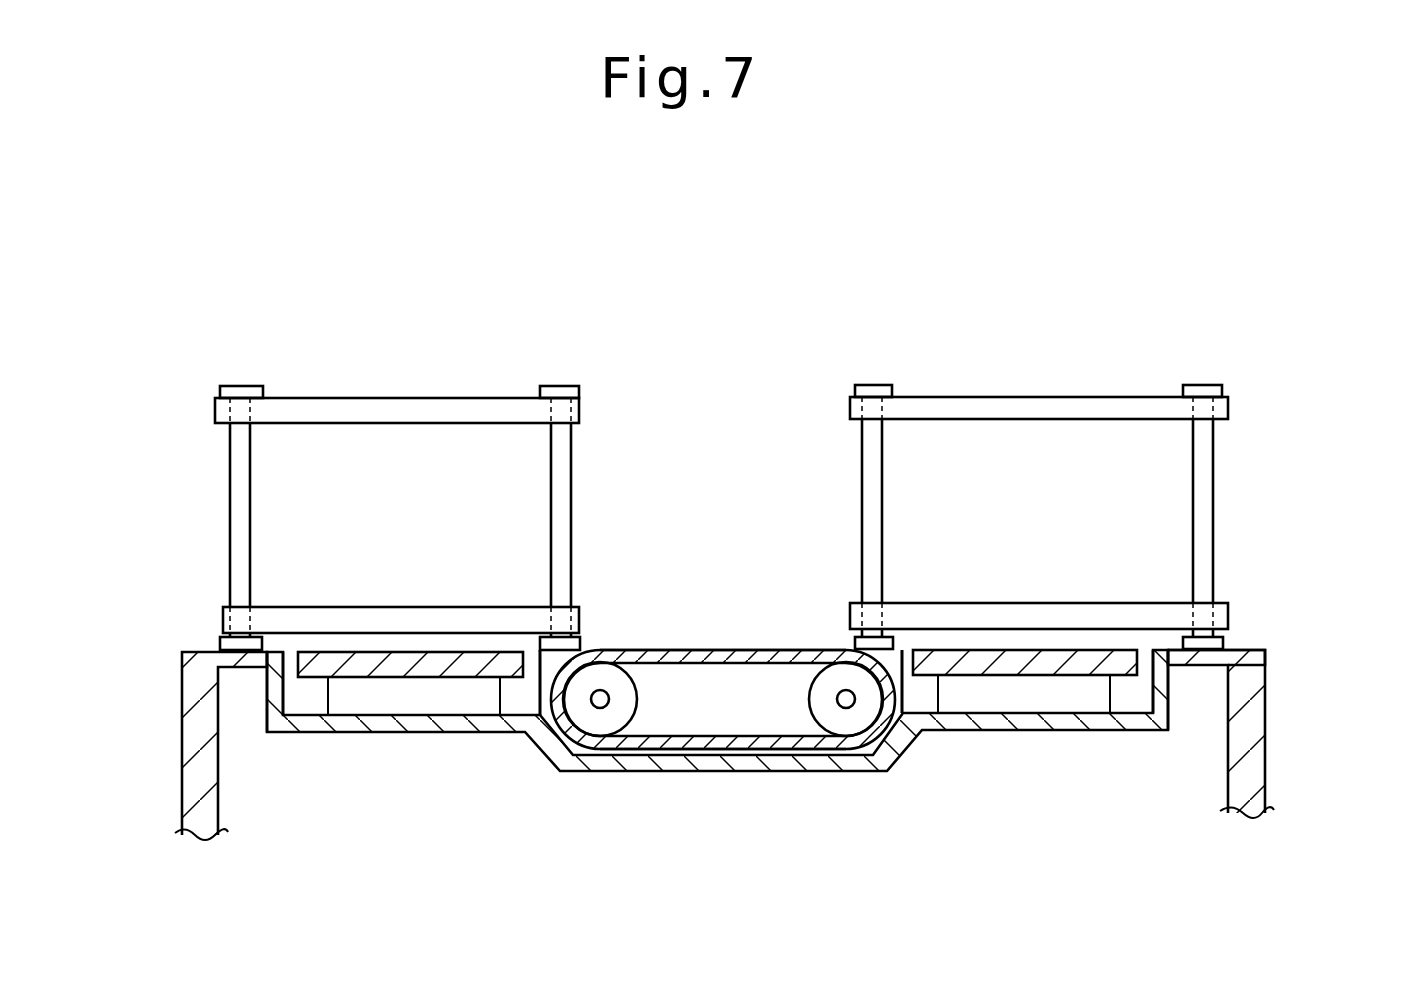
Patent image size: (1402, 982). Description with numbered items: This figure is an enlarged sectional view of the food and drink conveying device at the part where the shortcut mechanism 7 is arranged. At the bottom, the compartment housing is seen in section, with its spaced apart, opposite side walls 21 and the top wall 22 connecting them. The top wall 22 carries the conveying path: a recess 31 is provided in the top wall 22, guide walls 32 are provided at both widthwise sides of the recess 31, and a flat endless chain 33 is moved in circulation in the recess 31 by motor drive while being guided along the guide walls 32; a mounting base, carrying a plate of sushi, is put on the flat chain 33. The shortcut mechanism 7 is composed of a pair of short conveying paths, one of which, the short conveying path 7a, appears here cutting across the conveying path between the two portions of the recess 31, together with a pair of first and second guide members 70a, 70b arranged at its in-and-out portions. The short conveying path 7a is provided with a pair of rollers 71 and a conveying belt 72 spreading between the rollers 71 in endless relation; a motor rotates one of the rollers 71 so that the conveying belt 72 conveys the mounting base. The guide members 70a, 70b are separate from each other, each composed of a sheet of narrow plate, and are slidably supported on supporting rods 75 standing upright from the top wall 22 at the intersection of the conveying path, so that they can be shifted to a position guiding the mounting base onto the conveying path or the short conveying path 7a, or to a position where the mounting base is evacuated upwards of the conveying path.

The shortcut mechanism 7 is at (740, 442).
The short conveying path 7a is at (678, 648).
The side wall 21 is at (183, 770).
The top wall 22 is at (1247, 650).
The recess 31 is at (413, 707).
The guide wall 32 is at (298, 717).
The flat endless chain 33 is at (370, 662).
The first guide member 70a is at (407, 412).
The second guide member 70b is at (1040, 413).
The roller 71 is at (597, 720).
The conveying belt 72 is at (732, 648).
The supporting rod 75 is at (235, 515).